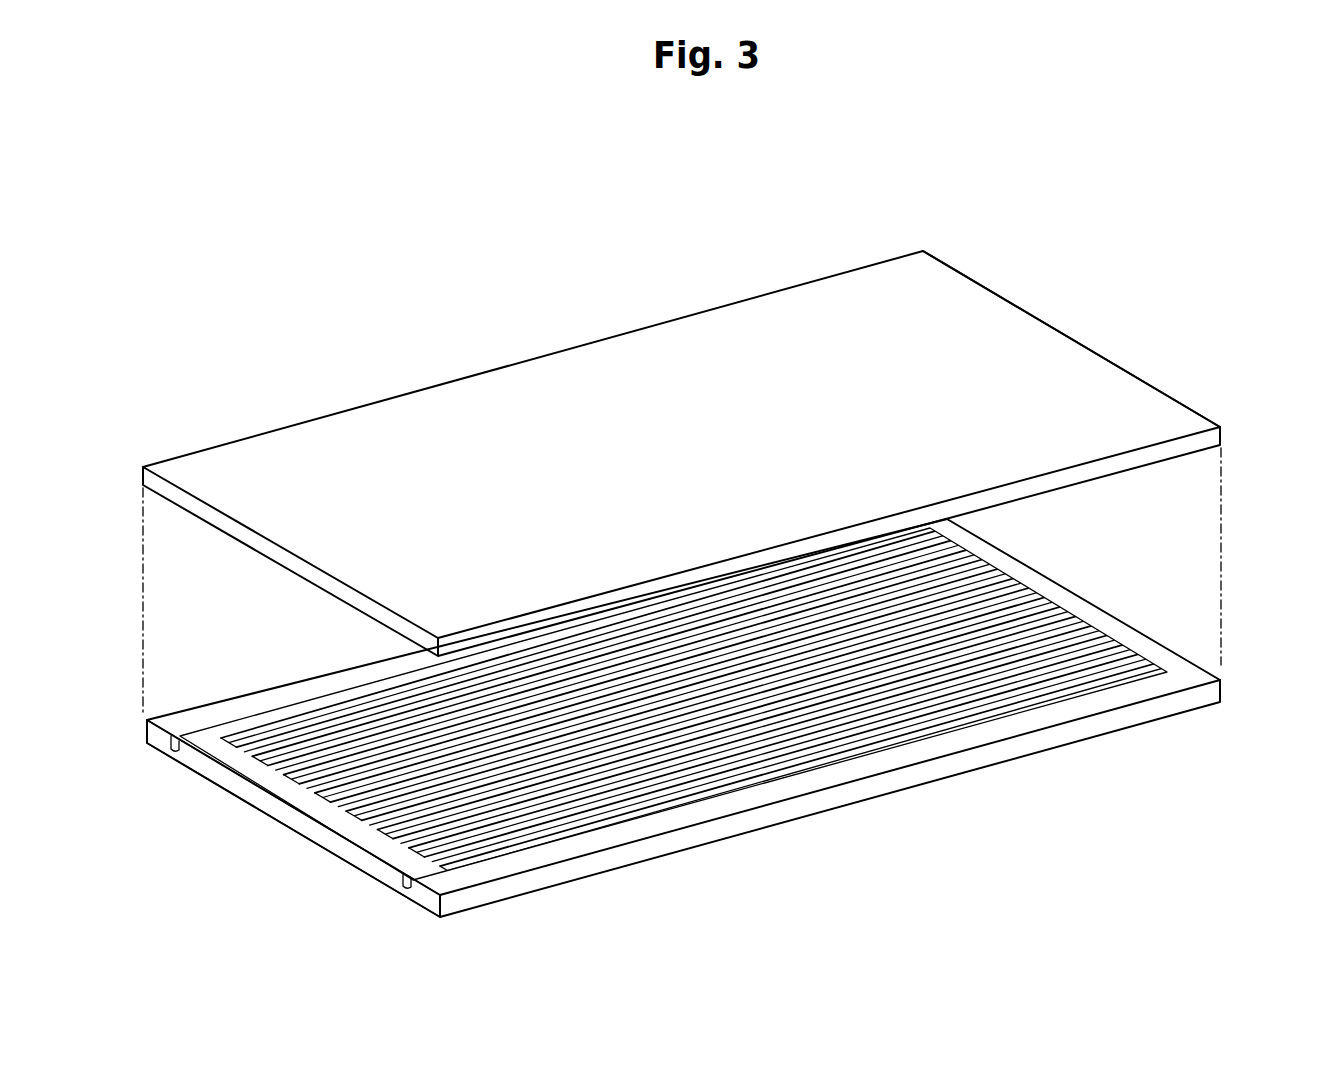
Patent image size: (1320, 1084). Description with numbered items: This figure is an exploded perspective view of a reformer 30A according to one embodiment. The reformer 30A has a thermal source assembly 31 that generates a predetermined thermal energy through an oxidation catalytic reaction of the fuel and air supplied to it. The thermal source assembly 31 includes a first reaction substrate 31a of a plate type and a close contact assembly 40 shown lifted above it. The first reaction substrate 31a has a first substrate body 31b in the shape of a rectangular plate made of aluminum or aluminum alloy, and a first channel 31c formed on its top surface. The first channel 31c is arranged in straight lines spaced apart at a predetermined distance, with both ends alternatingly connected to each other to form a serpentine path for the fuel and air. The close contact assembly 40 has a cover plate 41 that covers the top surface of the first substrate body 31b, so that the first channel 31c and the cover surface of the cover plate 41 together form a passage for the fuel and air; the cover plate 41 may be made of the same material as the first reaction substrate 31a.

The reformer 30A is at (1222, 177).
The thermal source assembly 31 is at (1193, 351).
The first reaction substrate 31a is at (940, 802).
The first substrate body 31b is at (380, 874).
The first channel 31c is at (615, 808).
The close contact assembly 40 is at (638, 319).
The cover plate 41 is at (1023, 310).